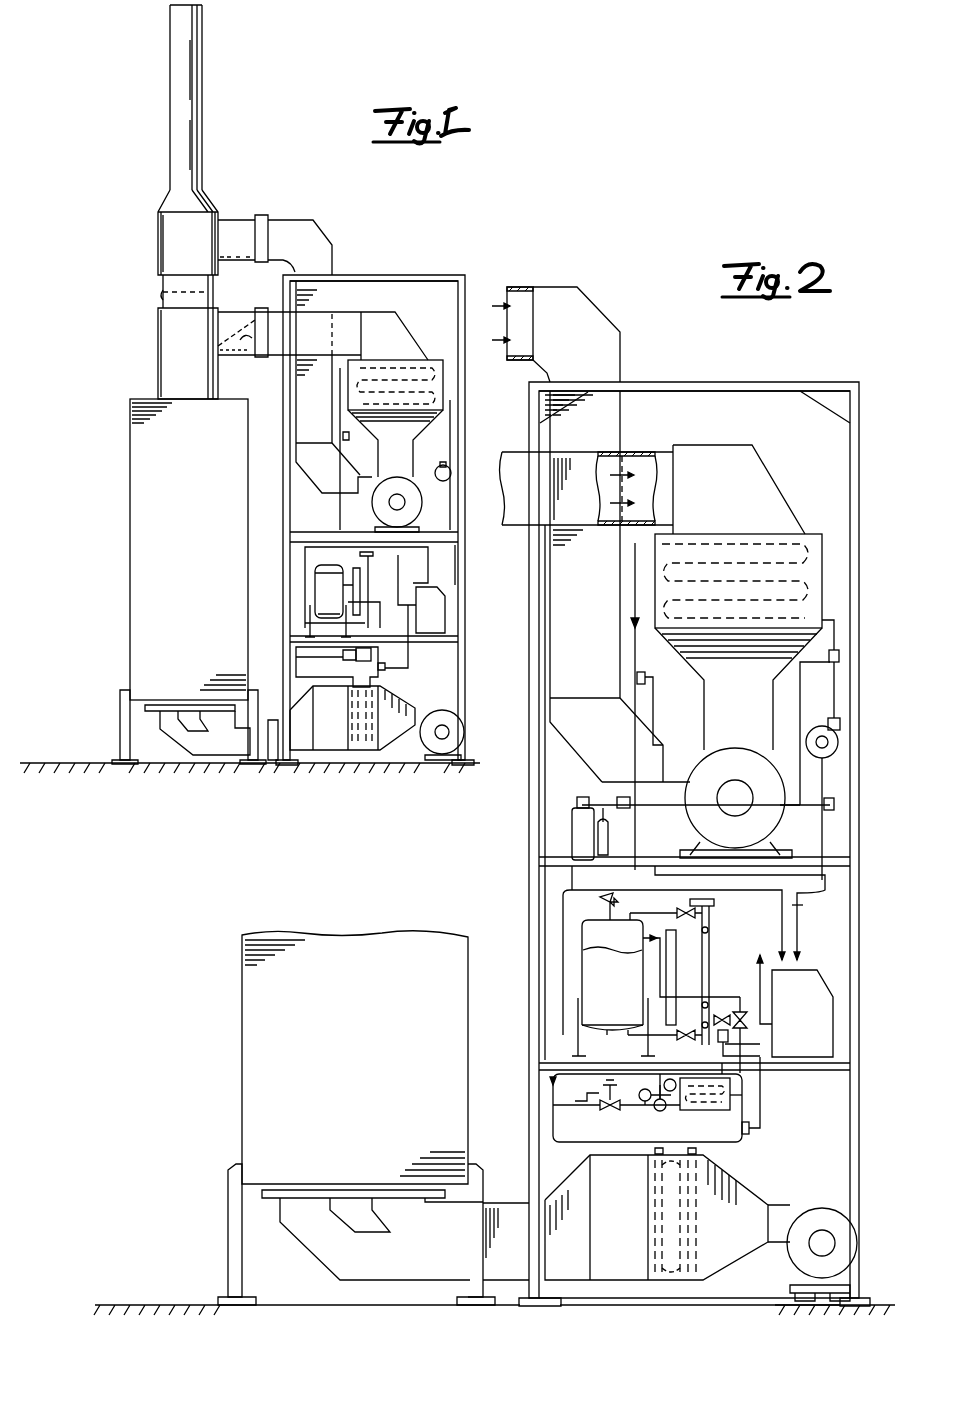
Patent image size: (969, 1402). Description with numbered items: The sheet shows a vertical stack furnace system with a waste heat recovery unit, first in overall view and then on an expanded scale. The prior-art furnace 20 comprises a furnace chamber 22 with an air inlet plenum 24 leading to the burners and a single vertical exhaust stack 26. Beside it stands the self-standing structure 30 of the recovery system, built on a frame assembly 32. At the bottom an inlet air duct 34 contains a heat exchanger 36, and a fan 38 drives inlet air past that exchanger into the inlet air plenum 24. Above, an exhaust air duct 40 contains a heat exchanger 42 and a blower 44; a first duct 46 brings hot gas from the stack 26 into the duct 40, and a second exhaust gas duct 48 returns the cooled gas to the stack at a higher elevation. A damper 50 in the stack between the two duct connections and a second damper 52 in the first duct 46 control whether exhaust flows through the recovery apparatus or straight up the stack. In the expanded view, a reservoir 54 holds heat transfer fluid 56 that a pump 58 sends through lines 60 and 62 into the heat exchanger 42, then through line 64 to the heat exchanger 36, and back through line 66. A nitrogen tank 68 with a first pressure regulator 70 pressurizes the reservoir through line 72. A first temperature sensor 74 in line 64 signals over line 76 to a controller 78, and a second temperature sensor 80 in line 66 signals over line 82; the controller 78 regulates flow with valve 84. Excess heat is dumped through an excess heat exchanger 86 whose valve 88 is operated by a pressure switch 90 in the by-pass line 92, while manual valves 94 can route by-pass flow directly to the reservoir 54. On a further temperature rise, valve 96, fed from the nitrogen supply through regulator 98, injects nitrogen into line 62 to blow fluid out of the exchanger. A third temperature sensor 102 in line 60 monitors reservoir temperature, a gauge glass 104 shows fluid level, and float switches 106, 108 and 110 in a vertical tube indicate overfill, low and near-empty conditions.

In FIG. 1, the furnace 20 is at (114, 495).
In FIG. 2, the furnace 20 is at (232, 987).
In FIG. 1, the furnace chamber 22 is at (130, 622).
In FIG. 2, the furnace chamber 22 is at (241, 1111).
In FIG. 1, the air inlet plenum 24 is at (186, 740).
In FIG. 2, the air inlet plenum 24 is at (345, 1266).
In FIG. 1, the vertical exhaust stack 26 is at (116, 313).
In FIG. 1, the self-standing structure 30 is at (462, 250).
In FIG. 2, the self-standing structure 30 is at (770, 364).
In FIG. 1, the frame assembly 32 is at (474, 680).
In FIG. 2, the frame assembly 32 is at (860, 947).
In FIG. 1, the inlet air duct 34 is at (333, 747).
In FIG. 2, the inlet air duct 34 is at (623, 1280).
In FIG. 1, the heat exchanger 36 is at (356, 750).
In FIG. 2, the heat exchanger 36 is at (687, 1272).
In FIG. 1, the fan 38 is at (430, 740).
In FIG. 2, the fan 38 is at (835, 1195).
In FIG. 1, the exhaust air duct 40 is at (412, 336).
In FIG. 2, the exhaust air duct 40 is at (770, 490).
In FIG. 1, the heat exchanger 42 is at (400, 360).
In FIG. 2, the heat exchanger 42 is at (822, 568).
In FIG. 1, the blower 44 is at (410, 510).
In FIG. 2, the blower 44 is at (753, 756).
In FIG. 1, the first duct 46 is at (354, 312).
In FIG. 2, the first duct 46 is at (638, 453).
In FIG. 1, the second exhaust gas duct 48 is at (313, 223).
In FIG. 2, the second exhaust gas duct 48 is at (599, 328).
In FIG. 1, the damper 50 is at (163, 284).
In FIG. 1, the second damper 52 is at (250, 354).
In FIG. 1, the reservoir 54 is at (374, 606).
In FIG. 2, the reservoir 54 is at (583, 948).
In FIG. 2, the heat transfer fluid 56 is at (600, 990).
In FIG. 2, the pump 58 is at (822, 726).
In FIG. 2, the line 60 is at (588, 918).
In FIG. 2, the line 62 is at (835, 630).
In FIG. 2, the line 64 is at (625, 586).
In FIG. 1, the line 66 is at (340, 667).
In FIG. 2, the line 66 is at (746, 1099).
In FIG. 2, the nitrogen tank 68 is at (628, 836).
In FIG. 2, the first pressure regulator 70 is at (582, 798).
In FIG. 2, the line 72 is at (580, 836).
In FIG. 2, the first temperature sensor 74 is at (640, 672).
In FIG. 2, the line 76 is at (796, 922).
In FIG. 2, the controller 78 is at (694, 1020).
In FIG. 2, the second temperature sensor 80 is at (748, 1130).
In FIG. 2, the line 82 is at (763, 955).
In FIG. 2, the valve 84 is at (740, 1010).
In FIG. 2, the excess heat exchanger 86 is at (703, 1108).
In FIG. 2, the valve 88 is at (622, 1115).
In FIG. 2, the pressure switch 90 is at (597, 1102).
In FIG. 2, the by-pass line 92 is at (561, 1108).
In FIG. 2, the manual valves 94 is at (670, 1093).
In FIG. 2, the valve 96 is at (842, 660).
In FIG. 2, the regulator 98 is at (623, 796).
In FIG. 2, the third temperature sensor 102 is at (840, 790).
In FIG. 2, the gauge glass 104 is at (668, 970).
In FIG. 2, the float switch 106 is at (705, 932).
In FIG. 2, the float switch 108 is at (708, 996).
In FIG. 2, the float switch 110 is at (720, 1030).